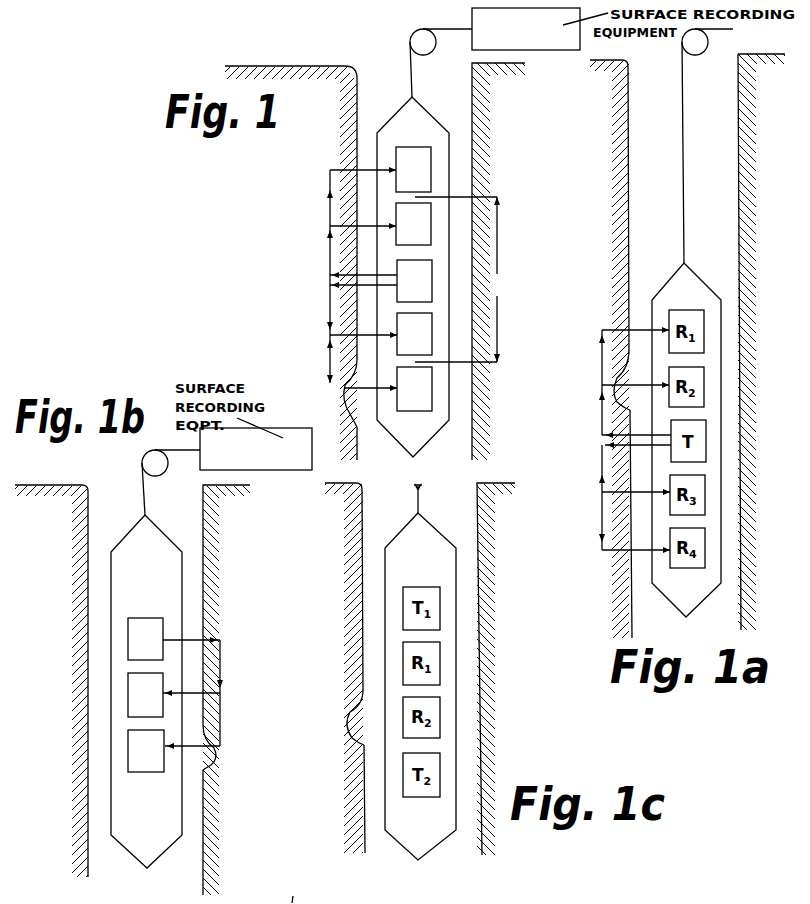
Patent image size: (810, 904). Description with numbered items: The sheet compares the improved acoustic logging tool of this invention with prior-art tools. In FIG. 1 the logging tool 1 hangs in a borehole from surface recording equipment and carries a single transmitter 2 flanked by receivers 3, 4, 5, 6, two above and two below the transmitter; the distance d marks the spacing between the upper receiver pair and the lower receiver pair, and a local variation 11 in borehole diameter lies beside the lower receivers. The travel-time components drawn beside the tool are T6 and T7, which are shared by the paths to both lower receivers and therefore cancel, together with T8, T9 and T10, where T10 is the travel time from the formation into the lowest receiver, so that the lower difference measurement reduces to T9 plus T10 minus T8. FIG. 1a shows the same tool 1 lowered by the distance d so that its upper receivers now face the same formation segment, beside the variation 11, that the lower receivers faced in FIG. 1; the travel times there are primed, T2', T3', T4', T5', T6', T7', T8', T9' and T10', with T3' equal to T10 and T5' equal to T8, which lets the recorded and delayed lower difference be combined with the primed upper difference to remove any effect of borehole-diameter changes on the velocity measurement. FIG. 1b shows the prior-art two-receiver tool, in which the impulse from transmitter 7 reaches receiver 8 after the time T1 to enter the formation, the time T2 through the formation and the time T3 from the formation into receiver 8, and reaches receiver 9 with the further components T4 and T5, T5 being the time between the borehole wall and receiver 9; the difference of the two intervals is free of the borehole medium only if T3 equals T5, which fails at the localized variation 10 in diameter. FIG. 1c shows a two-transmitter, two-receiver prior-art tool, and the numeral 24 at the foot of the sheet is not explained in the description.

In FIG. 1, the logging tool 1 is at (425, 108).
In FIG. 1A, the logging tool 1 is at (692, 275).
In FIG. 1, the transmitter 2 is at (432, 280).
In FIG. 1, the receiver 3 is at (431, 226).
In FIG. 1, the receiver 4 is at (431, 175).
In FIG. 1, the receiver 5 is at (432, 334).
In FIG. 1, the receiver 6 is at (432, 390).
In FIG. 1B, the transmitter 7 is at (128, 630).
In FIG. 1B, the receiver 8 is at (128, 695).
In FIG. 1B, the receiver 9 is at (128, 745).
In FIG. 1B, the localized variation in borehole diameter 10 is at (215, 760).
In FIG. 1, the local variation in borehole diameter 11 is at (345, 398).
In FIG. 1A, the local variation in borehole diameter 11 is at (615, 402).
In FIG. 1B, the reference numeral 24 is at (290, 890).
In FIG. 1, the distance d is at (459, 279).
In FIG. 1, the travel time T1 is at (340, 275).
In FIG. 1B, the travel time T1 is at (190, 640).
In FIG. 1, the travel time T2 is at (306, 245).
In FIG. 1B, the travel time T2 is at (256, 641).
In FIG. 1, the travel time T3 is at (334, 220).
In FIG. 1B, the travel time T3 is at (216, 678).
In FIG. 1, the travel time T4 is at (299, 183).
In FIG. 1B, the travel time T4 is at (247, 708).
In FIG. 1, the travel time T5 is at (346, 157).
In FIG. 1B, the travel time T5 is at (213, 738).
In FIG. 1, the travel time T6 is at (338, 300).
In FIG. 1, the travel time T7 is at (347, 329).
In FIG. 1, the travel time T8 is at (306, 352).
In FIG. 1, the travel time T9 is at (338, 389).
In FIG. 1, the travel time T10 is at (344, 421).
In FIG. 1A, the primed travel time T2' is at (606, 446).
In FIG. 1A, the primed travel time T3' is at (611, 385).
In FIG. 1A, the primed travel time T4' is at (575, 339).
In FIG. 1A, the primed travel time T5' is at (625, 305).
In FIG. 1A, the primed travel time T6' is at (613, 473).
In FIG. 1A, the primed travel time T7' is at (615, 515).
In FIG. 1A, the primed travel time T8' is at (582, 538).
In FIG. 1A, the primed travel time T9' is at (612, 574).
In FIG. 1A, the primed travel time T10' is at (611, 592).